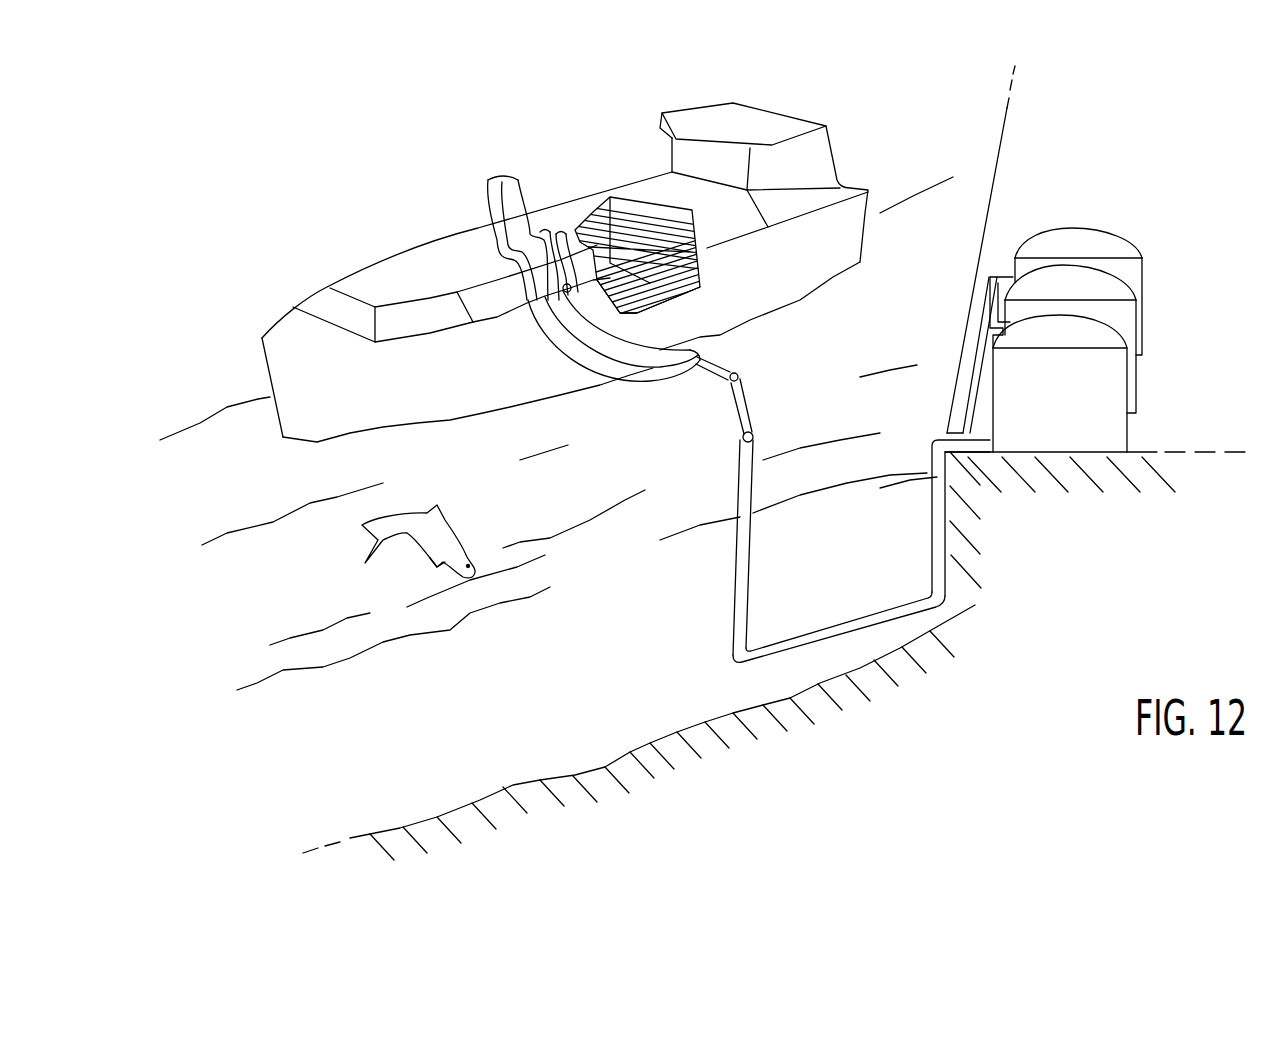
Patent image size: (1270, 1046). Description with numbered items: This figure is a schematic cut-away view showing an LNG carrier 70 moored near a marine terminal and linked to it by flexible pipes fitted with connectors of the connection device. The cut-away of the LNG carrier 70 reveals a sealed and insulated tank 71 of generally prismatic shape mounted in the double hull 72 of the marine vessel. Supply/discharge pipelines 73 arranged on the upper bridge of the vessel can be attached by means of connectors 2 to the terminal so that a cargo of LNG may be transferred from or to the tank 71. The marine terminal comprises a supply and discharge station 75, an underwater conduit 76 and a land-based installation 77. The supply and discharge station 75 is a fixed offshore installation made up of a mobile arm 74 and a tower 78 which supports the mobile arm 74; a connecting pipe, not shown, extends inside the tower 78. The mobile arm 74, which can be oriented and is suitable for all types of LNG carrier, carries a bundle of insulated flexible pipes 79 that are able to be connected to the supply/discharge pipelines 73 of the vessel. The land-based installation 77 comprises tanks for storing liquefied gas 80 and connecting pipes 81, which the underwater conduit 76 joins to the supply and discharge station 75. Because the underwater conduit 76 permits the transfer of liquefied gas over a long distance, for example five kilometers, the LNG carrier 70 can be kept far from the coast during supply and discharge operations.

The LNG carrier 70 is at (790, 112).
The sealed and insulated tank 71 is at (637, 240).
The double hull 72 is at (703, 280).
The supply/discharge pipelines 73 is at (489, 180).
The connectors 2 is at (530, 305).
The mobile arm 74 is at (745, 396).
The supply and discharge station 75 is at (1068, 224).
The underwater conduit 76 is at (840, 630).
The land-based installation 77 is at (965, 380).
The tower 78 is at (738, 540).
The bundle of insulated flexible pipes 79 is at (670, 385).
The tanks for storing liquefied gas 80 is at (1017, 245).
The connecting pipes 81 is at (955, 425).